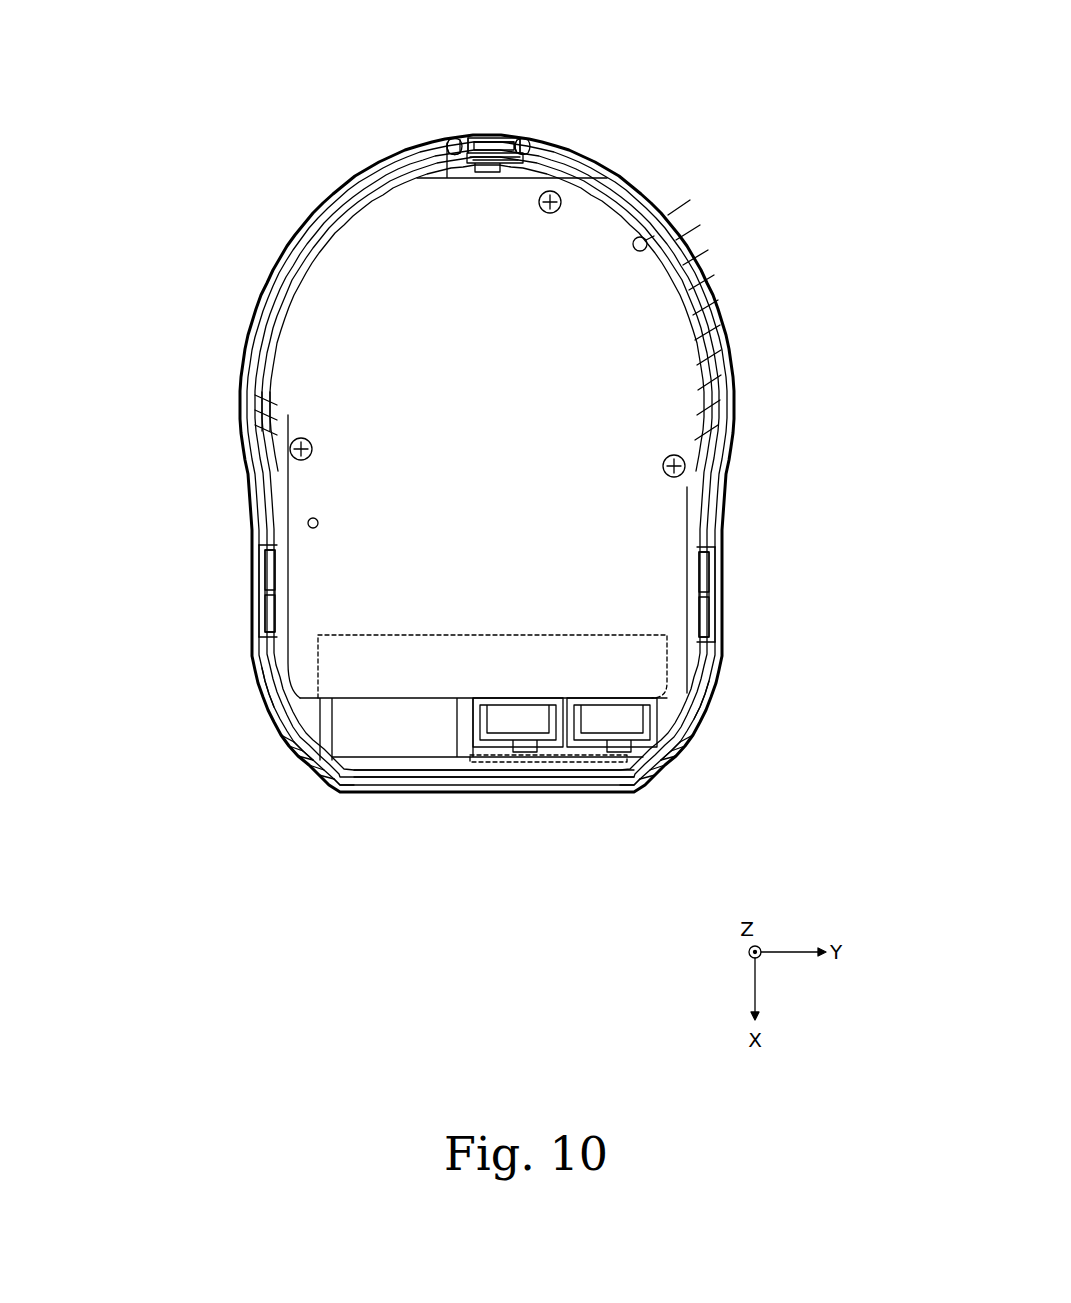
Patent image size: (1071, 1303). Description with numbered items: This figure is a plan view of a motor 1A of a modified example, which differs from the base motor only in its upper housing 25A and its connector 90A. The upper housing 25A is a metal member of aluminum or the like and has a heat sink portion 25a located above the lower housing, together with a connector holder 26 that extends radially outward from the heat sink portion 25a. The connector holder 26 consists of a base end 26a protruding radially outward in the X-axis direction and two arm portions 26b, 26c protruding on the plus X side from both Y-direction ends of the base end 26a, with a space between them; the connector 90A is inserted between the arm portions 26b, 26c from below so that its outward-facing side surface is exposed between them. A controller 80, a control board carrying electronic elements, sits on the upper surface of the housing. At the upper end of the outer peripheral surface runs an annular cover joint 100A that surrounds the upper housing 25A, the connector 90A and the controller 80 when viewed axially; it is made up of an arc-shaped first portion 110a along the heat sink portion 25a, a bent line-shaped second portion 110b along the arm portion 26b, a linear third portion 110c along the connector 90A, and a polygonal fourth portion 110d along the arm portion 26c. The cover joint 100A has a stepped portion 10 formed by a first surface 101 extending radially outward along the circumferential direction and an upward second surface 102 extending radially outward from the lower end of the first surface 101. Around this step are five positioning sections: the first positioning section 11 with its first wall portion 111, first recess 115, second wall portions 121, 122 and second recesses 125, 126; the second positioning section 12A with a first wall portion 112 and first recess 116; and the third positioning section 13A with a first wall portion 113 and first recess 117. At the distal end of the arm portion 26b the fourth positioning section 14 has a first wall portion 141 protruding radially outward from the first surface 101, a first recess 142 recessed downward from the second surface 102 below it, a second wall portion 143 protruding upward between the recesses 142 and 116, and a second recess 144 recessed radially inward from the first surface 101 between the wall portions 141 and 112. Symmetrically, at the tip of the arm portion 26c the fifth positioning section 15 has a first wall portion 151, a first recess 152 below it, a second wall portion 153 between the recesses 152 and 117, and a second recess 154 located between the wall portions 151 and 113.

The motor 1A is at (694, 124).
The stepped portion 10 is at (158, 305).
The first surface 101 is at (262, 321).
The second surface 102 is at (256, 366).
The first positioning section 11 is at (330, 62).
The first wall portion 111 is at (493, 140).
The first recess 115 is at (477, 137).
The second wall portion 121 is at (523, 138).
The second wall portion 122 is at (450, 138).
The second recess 125 is at (537, 140).
The second recess 126 is at (443, 142).
The second positioning section 12A is at (185, 582).
The first wall portion 112 is at (268, 585).
The first recess 116 is at (268, 625).
The third positioning section 13A is at (815, 582).
The first wall portion 113 is at (707, 590).
The first recess 117 is at (707, 630).
The fourth positioning section 14 is at (390, 850).
The first wall portion 141 is at (337, 787).
The first recess 142 is at (348, 787).
The second wall portion 143 is at (307, 762).
The second recess 144 is at (300, 758).
The fifth positioning section 15 is at (790, 850).
The first wall portion 151 is at (640, 790).
The first recess 152 is at (622, 785).
The second wall portion 153 is at (665, 770).
The second recess 154 is at (690, 750).
The upper housing 25A is at (722, 258).
The heat sink portion 25a is at (293, 278).
The connector holder 26 is at (250, 566).
The base end 26a is at (645, 566).
The arm portion 26b is at (270, 688).
The arm portion 26c is at (700, 665).
The controller 80 is at (667, 300).
The connector 90A is at (447, 760).
The cover joint 100A is at (243, 418).
The first portion 110a is at (305, 215).
The second portion 110b is at (250, 520).
The third portion 110c is at (520, 785).
The fourth portion 110d is at (718, 522).